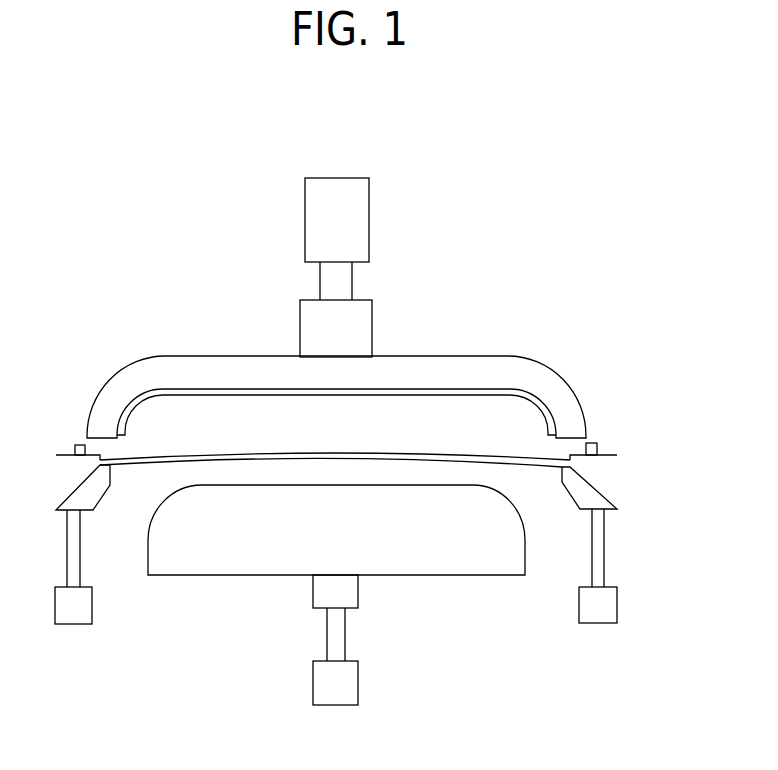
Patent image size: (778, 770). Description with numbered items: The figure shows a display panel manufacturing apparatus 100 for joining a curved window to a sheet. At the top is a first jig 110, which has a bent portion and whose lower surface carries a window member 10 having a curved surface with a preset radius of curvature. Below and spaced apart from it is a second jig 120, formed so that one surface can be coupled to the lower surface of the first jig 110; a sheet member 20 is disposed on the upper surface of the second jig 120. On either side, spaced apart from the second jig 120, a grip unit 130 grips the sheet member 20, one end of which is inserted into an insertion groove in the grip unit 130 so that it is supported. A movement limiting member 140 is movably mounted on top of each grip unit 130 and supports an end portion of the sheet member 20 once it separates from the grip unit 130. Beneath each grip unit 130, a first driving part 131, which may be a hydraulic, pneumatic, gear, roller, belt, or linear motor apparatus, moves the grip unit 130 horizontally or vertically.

The display panel manufacturing apparatus 100 is at (116, 214).
The window member 10 is at (152, 392).
The sheet member 20 is at (525, 457).
The first jig 110 is at (460, 368).
The second jig 120 is at (455, 562).
The grip unit 130 is at (600, 484).
The first driving part 131 is at (600, 605).
The movement limiting member 140 is at (78, 448).